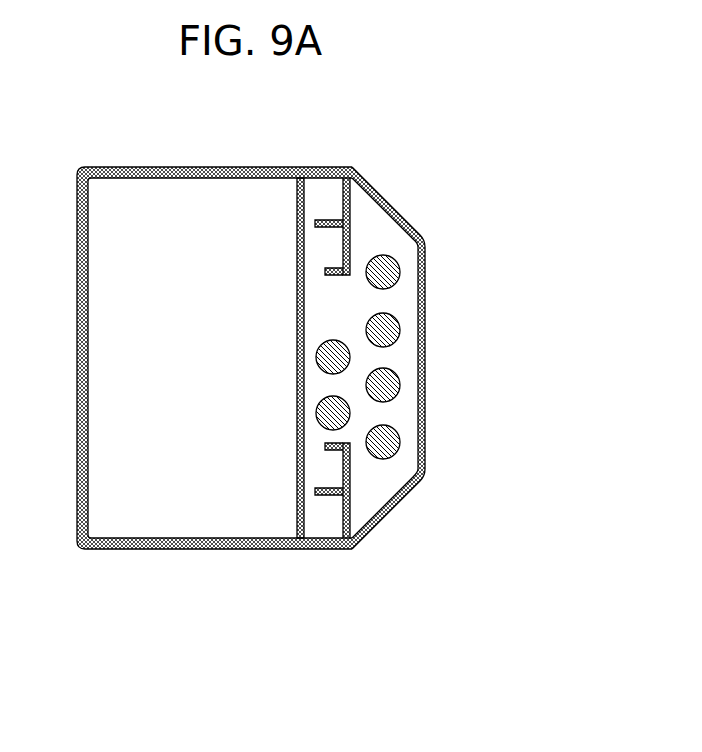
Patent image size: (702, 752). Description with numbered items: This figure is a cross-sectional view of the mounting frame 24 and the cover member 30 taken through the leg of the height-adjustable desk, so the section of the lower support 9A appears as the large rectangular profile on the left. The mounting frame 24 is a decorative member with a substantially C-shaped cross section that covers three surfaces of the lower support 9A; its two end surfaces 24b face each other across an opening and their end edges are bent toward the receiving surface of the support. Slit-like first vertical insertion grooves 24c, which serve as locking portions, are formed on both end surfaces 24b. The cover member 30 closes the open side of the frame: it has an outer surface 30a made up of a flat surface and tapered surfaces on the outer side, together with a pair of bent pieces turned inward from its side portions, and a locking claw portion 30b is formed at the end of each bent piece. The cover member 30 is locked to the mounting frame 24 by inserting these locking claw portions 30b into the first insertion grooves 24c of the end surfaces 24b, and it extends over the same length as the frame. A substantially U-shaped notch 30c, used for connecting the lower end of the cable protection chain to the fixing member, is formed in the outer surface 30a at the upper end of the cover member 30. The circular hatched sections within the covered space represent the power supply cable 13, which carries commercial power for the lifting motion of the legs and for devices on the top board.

The mounting frame 24 is at (312, 400).
The end surfaces 24b is at (350, 250).
The first vertical insertion grooves 24c is at (351, 228).
The cover member 30 is at (418, 365).
The outer surface 30a is at (423, 268).
The locking claw portion 30b is at (331, 217).
The notch 30c is at (423, 337).
The power supply cable 13 is at (401, 384).
The lower support 9A is at (198, 492).